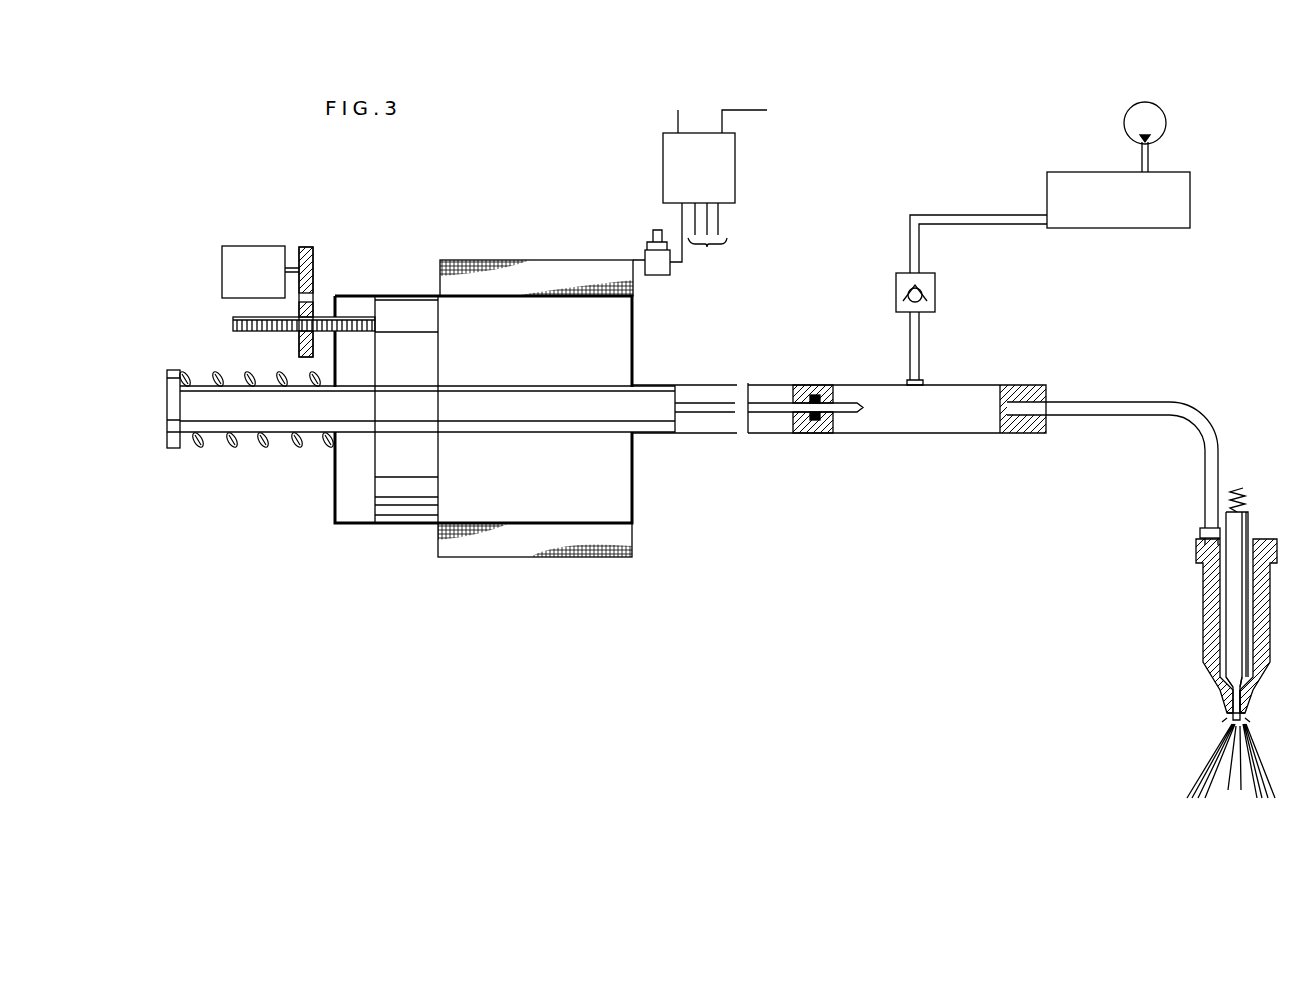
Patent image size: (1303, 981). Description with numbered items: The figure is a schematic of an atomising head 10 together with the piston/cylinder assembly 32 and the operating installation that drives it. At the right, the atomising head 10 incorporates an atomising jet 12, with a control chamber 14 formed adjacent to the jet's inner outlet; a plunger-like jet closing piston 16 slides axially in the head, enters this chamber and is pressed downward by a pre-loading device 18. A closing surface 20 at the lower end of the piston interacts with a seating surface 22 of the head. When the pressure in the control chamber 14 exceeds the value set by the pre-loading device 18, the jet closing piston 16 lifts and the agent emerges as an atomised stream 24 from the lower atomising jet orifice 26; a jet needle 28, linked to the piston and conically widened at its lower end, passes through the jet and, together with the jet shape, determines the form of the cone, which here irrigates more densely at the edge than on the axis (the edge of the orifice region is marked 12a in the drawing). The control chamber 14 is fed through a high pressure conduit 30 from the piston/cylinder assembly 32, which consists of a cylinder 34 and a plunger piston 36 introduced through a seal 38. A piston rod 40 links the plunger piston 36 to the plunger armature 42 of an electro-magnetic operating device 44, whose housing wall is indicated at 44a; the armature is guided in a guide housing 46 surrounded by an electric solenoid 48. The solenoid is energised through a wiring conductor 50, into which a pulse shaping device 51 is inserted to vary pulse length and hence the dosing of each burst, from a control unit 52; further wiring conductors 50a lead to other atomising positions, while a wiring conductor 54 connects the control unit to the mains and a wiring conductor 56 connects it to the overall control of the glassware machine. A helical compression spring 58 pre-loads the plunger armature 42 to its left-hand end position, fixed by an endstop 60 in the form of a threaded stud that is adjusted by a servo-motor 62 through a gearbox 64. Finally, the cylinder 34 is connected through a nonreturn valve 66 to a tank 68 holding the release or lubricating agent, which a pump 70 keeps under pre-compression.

The atomising head 10 is at (1217, 634).
The atomising jet 12 is at (1250, 712).
The orifice edge 12a is at (1246, 700).
The control chamber 14 is at (1253, 608).
The jet closing piston 16 is at (1228, 605).
The pre-loading device 18 is at (1246, 506).
The closing surface 20 is at (1234, 678).
The seating surface 22 is at (1222, 688).
The atomised stream 24 is at (1258, 770).
The lower atomising jet orifice 26 is at (1226, 724).
The jet needle 28 is at (1228, 736).
The high pressure conduit 30 is at (1130, 406).
The piston/cylinder assembly 32 is at (900, 434).
The cylinder 34 is at (945, 385).
The plunger piston 36 is at (762, 403).
The seal 38 is at (813, 427).
The piston rod 40 is at (570, 430).
The plunger armature 42 is at (430, 354).
The electro-magnetic operating device 44 is at (483, 565).
The housing wall 44a is at (631, 338).
The guide housing 46 is at (605, 522).
The electric solenoid 48 is at (564, 265).
The wiring conductor 50 is at (680, 216).
The further wiring conductors 50a is at (726, 239).
The pulse shaping device 51 is at (658, 275).
The control unit 52 is at (735, 160).
The wiring conductor 54 is at (676, 120).
The wiring conductor 56 is at (752, 110).
The helical compression spring 58 is at (232, 449).
The endstop 60 is at (250, 334).
The servo-motor 62 is at (252, 246).
The gearbox 64 is at (314, 280).
The nonreturn valve 66 is at (937, 296).
The tank 68 is at (1095, 218).
The pump 70 is at (1124, 130).